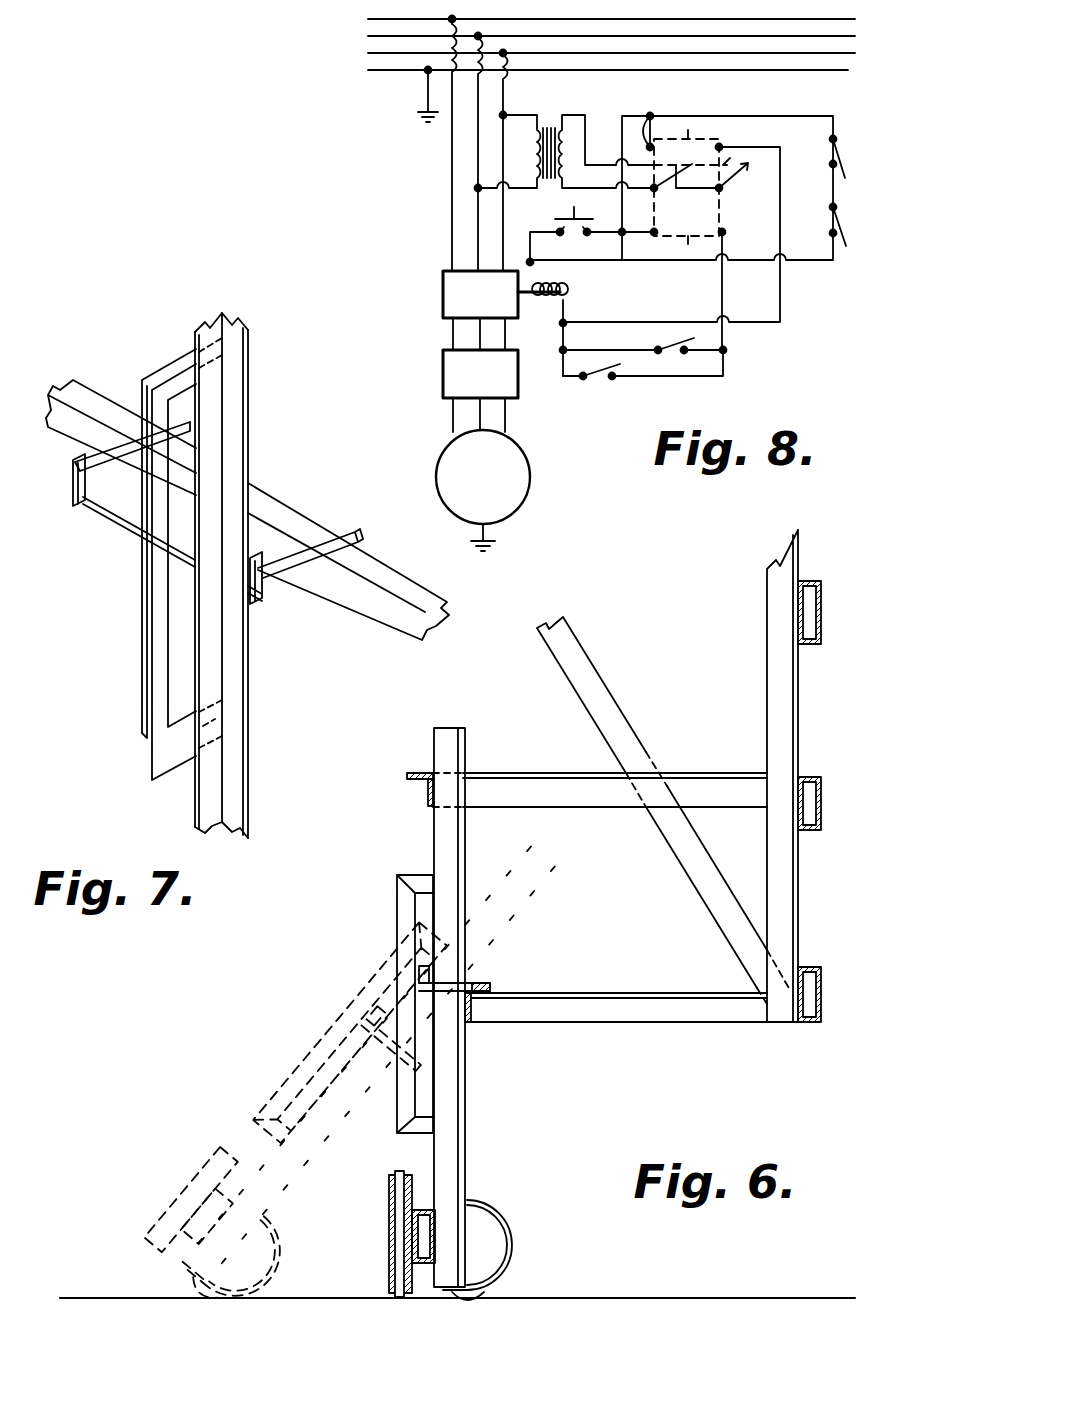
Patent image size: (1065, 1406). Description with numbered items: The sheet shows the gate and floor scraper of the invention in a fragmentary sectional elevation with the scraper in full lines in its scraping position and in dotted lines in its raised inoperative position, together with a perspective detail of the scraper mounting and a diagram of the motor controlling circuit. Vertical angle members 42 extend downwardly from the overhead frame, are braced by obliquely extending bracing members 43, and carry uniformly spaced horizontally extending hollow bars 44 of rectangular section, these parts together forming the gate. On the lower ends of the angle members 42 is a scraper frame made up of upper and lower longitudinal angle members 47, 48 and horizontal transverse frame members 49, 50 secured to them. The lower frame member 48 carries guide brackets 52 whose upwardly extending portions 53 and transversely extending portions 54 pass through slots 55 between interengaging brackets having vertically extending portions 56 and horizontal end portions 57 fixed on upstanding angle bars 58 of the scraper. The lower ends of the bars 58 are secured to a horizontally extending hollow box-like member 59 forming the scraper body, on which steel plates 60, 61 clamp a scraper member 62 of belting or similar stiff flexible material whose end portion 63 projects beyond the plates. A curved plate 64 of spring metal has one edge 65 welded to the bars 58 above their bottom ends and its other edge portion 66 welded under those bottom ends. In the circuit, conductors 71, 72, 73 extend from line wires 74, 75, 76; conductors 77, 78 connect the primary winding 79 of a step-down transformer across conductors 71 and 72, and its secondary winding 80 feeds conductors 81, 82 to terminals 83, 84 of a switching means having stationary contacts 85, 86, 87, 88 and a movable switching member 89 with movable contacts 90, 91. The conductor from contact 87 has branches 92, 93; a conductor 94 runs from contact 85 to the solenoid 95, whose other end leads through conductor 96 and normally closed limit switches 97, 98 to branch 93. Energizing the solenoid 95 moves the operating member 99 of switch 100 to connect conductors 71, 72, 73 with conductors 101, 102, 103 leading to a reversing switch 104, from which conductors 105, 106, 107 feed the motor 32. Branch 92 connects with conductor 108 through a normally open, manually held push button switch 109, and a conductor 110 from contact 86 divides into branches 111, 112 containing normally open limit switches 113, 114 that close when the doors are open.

In FIG. 8, the motor 32 is at (514, 461).
In FIG. 6, the angle members 42 is at (784, 719).
In FIG. 6, the bracing members 43 is at (591, 679).
In FIG. 6, the hollow bars 44 is at (822, 630).
In FIG. 6, the angle member 47 is at (407, 774).
In FIG. 7, the angle member 48 is at (355, 599).
In FIG. 6, the angle member 48 is at (471, 1016).
In FIG. 6, the transverse frame member 49 is at (722, 790).
In FIG. 6, the transverse frame member 50 is at (668, 1014).
In FIG. 7, the guide brackets 52 is at (128, 452).
In FIG. 6, the guide brackets 52 is at (491, 983).
In FIG. 7, the upwardly extending portions 53 is at (72, 483).
In FIG. 6, the upwardly extending portions 53 is at (421, 976).
In FIG. 7, the transversely extending portions 54 is at (131, 493).
In FIG. 6, the transversely extending portions 54 is at (405, 946).
In FIG. 7, the slots 55 is at (180, 585).
In FIG. 6, the slots 55 is at (428, 1080).
In FIG. 7, the vertically extending portions 56 is at (158, 633).
In FIG. 6, the vertically extending portions 56 is at (397, 921).
In FIG. 7, the horizontal end portions 57 is at (186, 758).
In FIG. 6, the horizontal end portions 57 is at (413, 871).
In FIG. 7, the upstanding angle bars 58 is at (237, 719).
In FIG. 6, the upstanding angle bars 58 is at (446, 736).
In FIG. 6, the hollow box-like member 59 is at (431, 1229).
In FIG. 6, the steel plate 60 is at (411, 1194).
In FIG. 6, the steel plate 61 is at (398, 1201).
In FIG. 6, the scraper member 62 is at (437, 1161).
In FIG. 6, the end portion 63 is at (392, 1294).
In FIG. 6, the curved plate 64 is at (513, 1249).
In FIG. 6, the edge 65 is at (468, 1201).
In FIG. 6, the edge portion 66 is at (490, 1298).
In FIG. 8, the conductor 71 is at (505, 93).
In FIG. 8, the conductor 72 is at (452, 150).
In FIG. 8, the conductor 73 is at (477, 182).
In FIG. 8, the line wire 74 is at (375, 55).
In FIG. 8, the line wire 75 is at (375, 38).
In FIG. 8, the line wire 76 is at (370, 21).
In FIG. 8, the conductor 77 is at (530, 114).
In FIG. 8, the conductor 78 is at (535, 190).
In FIG. 8, the primary winding 79 is at (536, 160).
In FIG. 8, the secondary winding 80 is at (589, 138).
In FIG. 8, the conductor 81 is at (573, 114).
In FIG. 8, the conductor 82 is at (561, 186).
In FIG. 8, the terminal 83 is at (724, 191).
In FIG. 8, the terminal 84 is at (660, 195).
In FIG. 8, the stationary contact 85 is at (722, 146).
In FIG. 8, the stationary contact 86 is at (726, 234).
In FIG. 8, the stationary contact 87 is at (650, 114).
In FIG. 8, the stationary contact 88 is at (648, 239).
In FIG. 8, the movable switching member 89 is at (748, 169).
In FIG. 8, the movable contact 90 is at (752, 179).
In FIG. 8, the movable contact 91 is at (692, 168).
In FIG. 8, the branch conductor 92 is at (616, 130).
In FIG. 8, the branch conductor 93 is at (805, 116).
In FIG. 8, the conductor 94 is at (782, 294).
In FIG. 8, the solenoid 95 is at (568, 302).
In FIG. 8, the conductor 96 is at (641, 262).
In FIG. 8, the limit switch 97 is at (845, 177).
In FIG. 8, the limit switch 98 is at (847, 244).
In FIG. 8, the operating member 99 is at (569, 298).
In FIG. 8, the switch 100 is at (446, 275).
In FIG. 8, the conductor 101 is at (506, 334).
In FIG. 8, the conductor 102 is at (478, 334).
In FIG. 8, the conductor 103 is at (452, 323).
In FIG. 8, the reversing switch 104 is at (446, 381).
In FIG. 8, the conductor 105 is at (508, 417).
In FIG. 8, the conductor 106 is at (479, 409).
In FIG. 8, the conductor 107 is at (456, 429).
In FIG. 8, the conductor 108 is at (532, 247).
In FIG. 8, the push button switch 109 is at (579, 218).
In FIG. 8, the conductor 110 is at (722, 293).
In FIG. 8, the branch conductor 111 is at (667, 380).
In FIG. 8, the branch conductor 112 is at (639, 351).
In FIG. 8, the limit switch 113 is at (619, 379).
In FIG. 8, the limit switch 114 is at (673, 341).